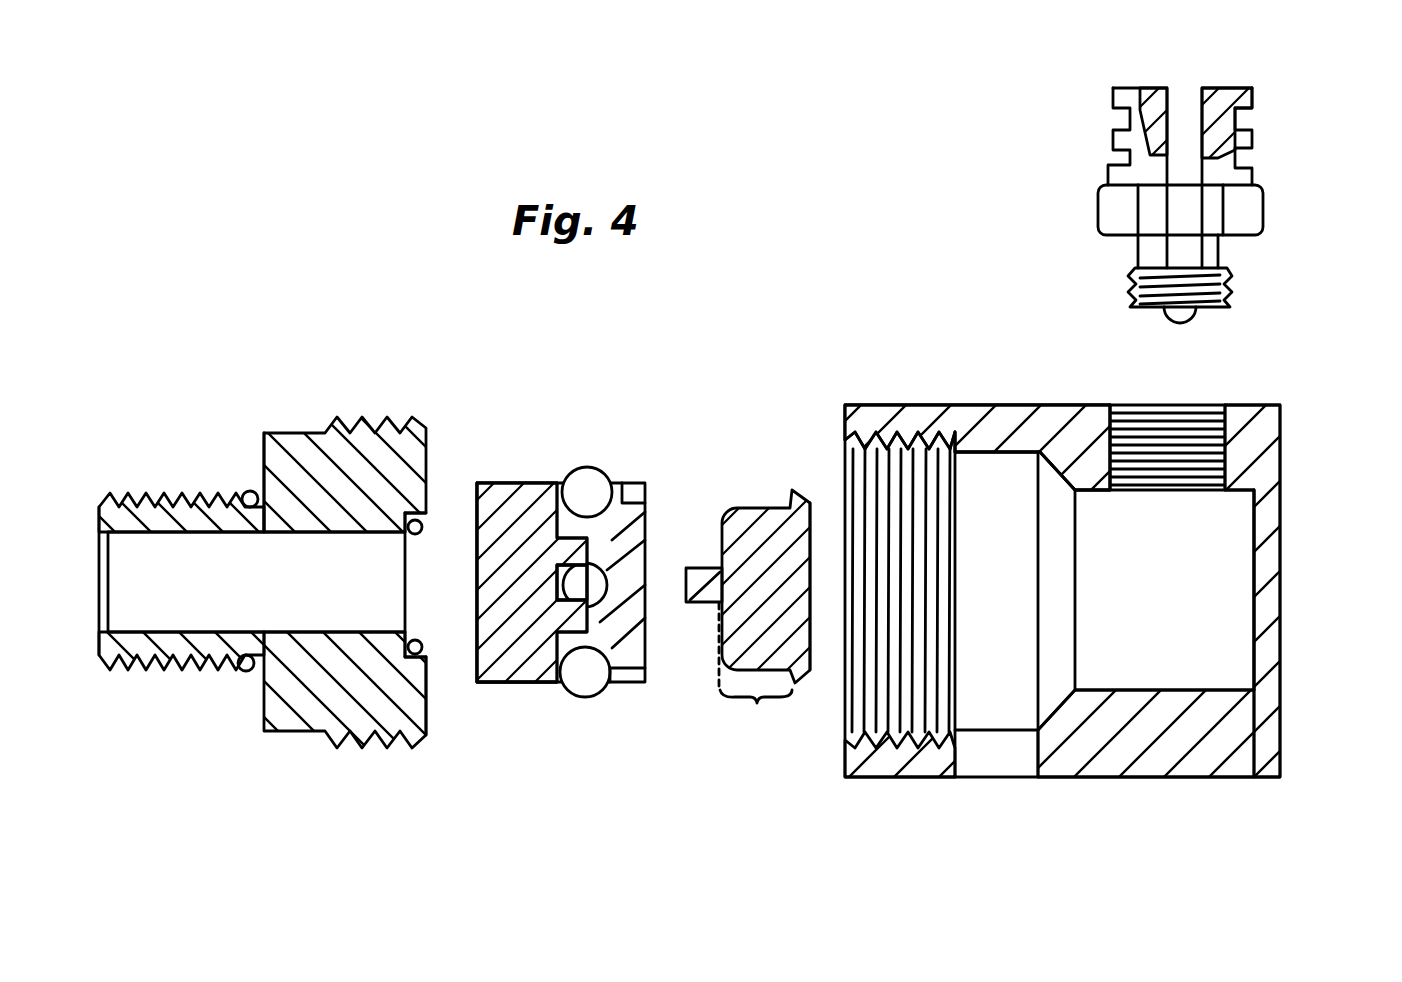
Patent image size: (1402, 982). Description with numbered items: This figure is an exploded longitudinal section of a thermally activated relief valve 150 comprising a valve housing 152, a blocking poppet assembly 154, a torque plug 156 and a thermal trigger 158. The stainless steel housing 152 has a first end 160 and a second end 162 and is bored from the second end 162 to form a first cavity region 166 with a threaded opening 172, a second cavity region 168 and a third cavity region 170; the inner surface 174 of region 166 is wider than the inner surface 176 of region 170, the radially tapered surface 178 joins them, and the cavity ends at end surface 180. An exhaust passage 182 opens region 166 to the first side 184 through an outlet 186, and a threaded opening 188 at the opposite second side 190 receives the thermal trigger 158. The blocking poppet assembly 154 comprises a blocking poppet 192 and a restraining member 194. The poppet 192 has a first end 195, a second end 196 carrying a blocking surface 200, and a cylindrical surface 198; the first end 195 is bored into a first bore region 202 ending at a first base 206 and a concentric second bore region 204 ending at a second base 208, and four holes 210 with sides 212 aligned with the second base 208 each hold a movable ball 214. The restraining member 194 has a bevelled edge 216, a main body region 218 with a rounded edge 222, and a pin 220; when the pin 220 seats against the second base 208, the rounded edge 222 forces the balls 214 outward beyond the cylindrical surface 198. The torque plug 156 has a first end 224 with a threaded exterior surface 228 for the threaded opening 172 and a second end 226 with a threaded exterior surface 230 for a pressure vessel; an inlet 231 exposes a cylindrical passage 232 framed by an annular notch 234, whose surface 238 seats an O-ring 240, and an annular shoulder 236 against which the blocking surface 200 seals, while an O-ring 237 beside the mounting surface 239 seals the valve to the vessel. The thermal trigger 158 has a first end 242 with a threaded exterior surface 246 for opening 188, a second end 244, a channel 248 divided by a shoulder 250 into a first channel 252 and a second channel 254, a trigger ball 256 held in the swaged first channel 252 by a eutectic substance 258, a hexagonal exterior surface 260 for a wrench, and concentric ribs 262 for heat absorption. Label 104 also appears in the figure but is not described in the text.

The housing body 104 is at (1200, 745).
The relief valve 150 is at (735, 777).
The valve housing 152 is at (1052, 790).
The blocking poppet assembly 154 is at (640, 712).
The torque plug 156 is at (252, 750).
The thermal trigger 158 is at (1272, 178).
The first end 160 is at (1280, 722).
The second end 162 is at (862, 710).
The first cavity region 166 is at (968, 462).
The second cavity region 168 is at (1062, 490).
The third cavity region 170 is at (1225, 518).
The threaded opening 172 is at (895, 465).
The inner surface 174 is at (968, 462).
The inner surface 176 is at (1092, 492).
The radially tapered surface 178 is at (1057, 696).
The end surface 180 is at (1248, 612).
The exhaust passage 182 is at (967, 757).
The first side 184 is at (920, 748).
The outlet 186 is at (988, 760).
The threaded opening 188 is at (1185, 440).
The second side 190 is at (1090, 430).
The blocking poppet 192 is at (514, 472).
The restraining member 194 is at (753, 462).
The first end 195 is at (641, 712).
The second end 196 is at (470, 683).
The cylindrical surface 198 is at (480, 482).
The blocking surface 200 is at (428, 460).
The first bore region 202 is at (622, 527).
The second bore region 204 is at (592, 612).
The first base 206 is at (643, 652).
The second base 208 is at (610, 530).
The holes 210 is at (580, 490).
The sides 212 is at (549, 516).
The ball 214 is at (578, 482).
The bevelled edge 216 is at (810, 505).
The main body region 218 is at (751, 716).
The pin 220 is at (712, 606).
The rounded edge 222 is at (735, 510).
The first end 224 is at (427, 726).
The second end 226 is at (100, 620).
The threaded exterior surface 228 is at (347, 427).
The threaded exterior surface 230 is at (133, 488).
The inlet 231 is at (100, 570).
The cylindrical passage 232 is at (267, 598).
The annular notch 234 is at (404, 622).
The annular shoulder 236 is at (427, 682).
The O-ring 237 is at (240, 492).
The surface 238 is at (408, 525).
The mounting surface 239 is at (264, 462).
The O-ring 240 is at (385, 745).
The first end 242 is at (1210, 313).
The second end 244 is at (1208, 90).
The threaded exterior surface 246 is at (1223, 283).
The channel 248 is at (1235, 120).
The shoulder 250 is at (1140, 293).
The first channel 252 is at (1223, 302).
The second channel 254 is at (1130, 163).
The trigger ball 256 is at (1177, 317).
The eutectic substance 258 is at (1177, 100).
The hexagonal exterior surface 260 is at (1245, 212).
The concentric ribs 262 is at (1113, 92).